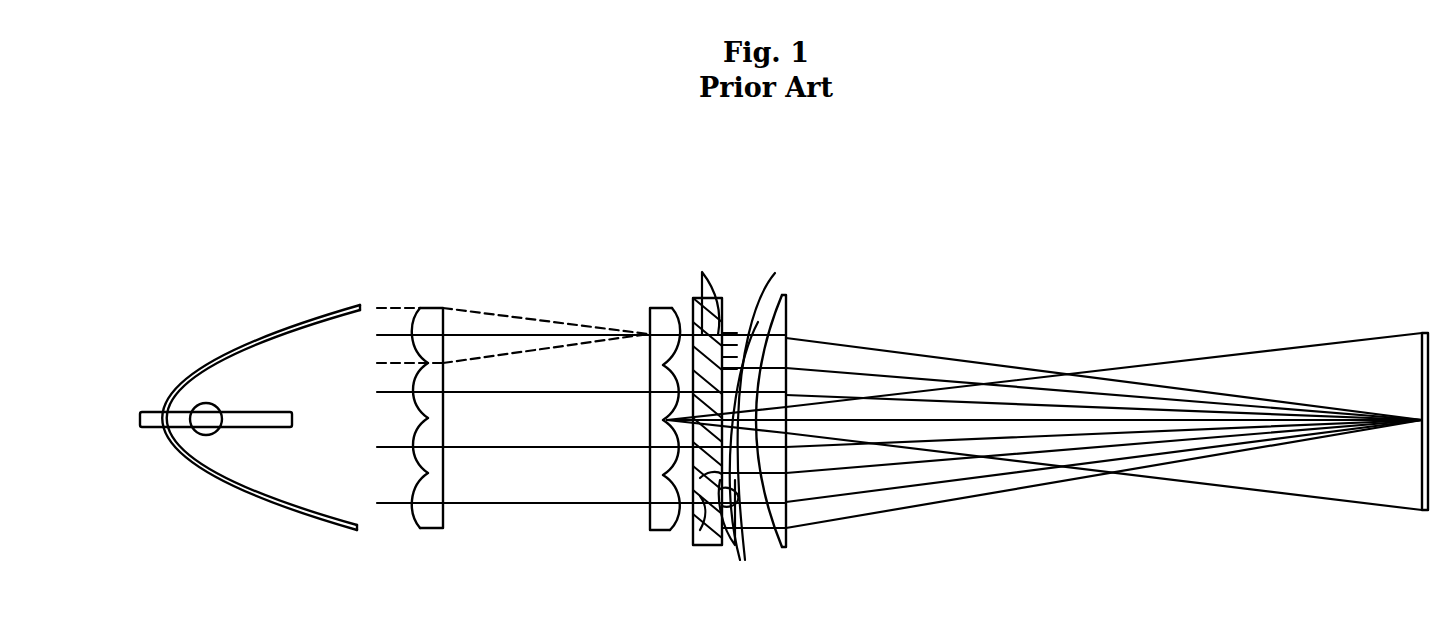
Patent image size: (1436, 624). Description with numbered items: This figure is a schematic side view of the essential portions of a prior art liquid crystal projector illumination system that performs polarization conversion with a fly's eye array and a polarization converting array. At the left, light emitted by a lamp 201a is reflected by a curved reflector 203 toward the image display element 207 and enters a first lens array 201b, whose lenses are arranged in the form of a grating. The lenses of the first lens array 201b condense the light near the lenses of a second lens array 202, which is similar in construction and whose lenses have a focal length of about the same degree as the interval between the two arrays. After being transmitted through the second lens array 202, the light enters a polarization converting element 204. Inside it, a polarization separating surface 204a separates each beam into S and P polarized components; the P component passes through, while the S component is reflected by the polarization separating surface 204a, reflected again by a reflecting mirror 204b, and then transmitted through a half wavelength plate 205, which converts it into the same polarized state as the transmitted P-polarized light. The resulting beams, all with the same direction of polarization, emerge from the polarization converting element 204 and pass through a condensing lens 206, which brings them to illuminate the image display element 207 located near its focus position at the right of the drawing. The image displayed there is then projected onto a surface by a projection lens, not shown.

The lamp 201a is at (218, 430).
The first lens array 201b is at (430, 312).
The second lens array 202 is at (658, 307).
The reflector 203 is at (326, 303).
The polarization converting element 204 is at (730, 293).
The polarization separating surface 204a is at (702, 272).
The reflecting mirror 204b is at (698, 517).
The half wavelength plate 205 is at (598, 552).
The condensing lens 206 is at (788, 318).
The image display element 207 is at (1425, 500).